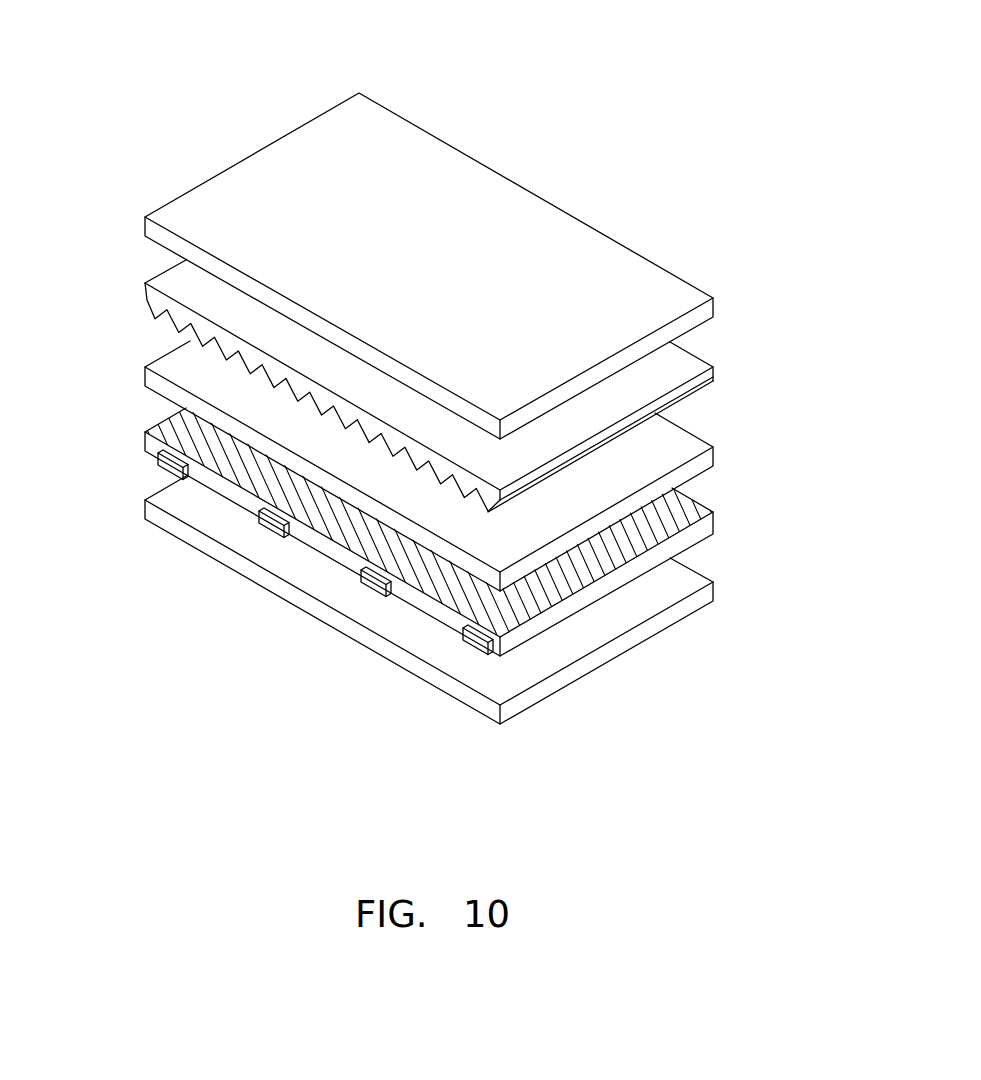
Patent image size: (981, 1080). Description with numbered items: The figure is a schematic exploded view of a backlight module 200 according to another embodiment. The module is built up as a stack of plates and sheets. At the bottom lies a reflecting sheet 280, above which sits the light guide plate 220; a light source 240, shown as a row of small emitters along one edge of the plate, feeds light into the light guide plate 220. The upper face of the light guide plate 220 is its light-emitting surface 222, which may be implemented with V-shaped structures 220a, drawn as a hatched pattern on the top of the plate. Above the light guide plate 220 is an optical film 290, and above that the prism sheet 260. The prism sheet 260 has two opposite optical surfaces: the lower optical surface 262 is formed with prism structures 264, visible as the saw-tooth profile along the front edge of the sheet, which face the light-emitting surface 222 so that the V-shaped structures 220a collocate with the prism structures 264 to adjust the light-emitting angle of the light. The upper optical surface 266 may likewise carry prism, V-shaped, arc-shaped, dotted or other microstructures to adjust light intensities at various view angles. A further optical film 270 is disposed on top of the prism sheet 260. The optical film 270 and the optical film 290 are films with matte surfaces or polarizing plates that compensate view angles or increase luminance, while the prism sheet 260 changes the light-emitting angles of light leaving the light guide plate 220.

The backlight module 200 is at (143, 34).
The optical film 270 is at (540, 219).
The prism sheet 260 is at (371, 370).
The optical surface 266 is at (181, 283).
The prism structures 264 is at (180, 317).
The optical surface 262 is at (188, 345).
The optical film 290 is at (678, 428).
The light guide plate 220 is at (438, 530).
The V-shaped structures 220a is at (672, 494).
The light-emitting surface 222 is at (655, 540).
The light source 240 is at (477, 641).
The reflecting sheet 280 is at (187, 533).